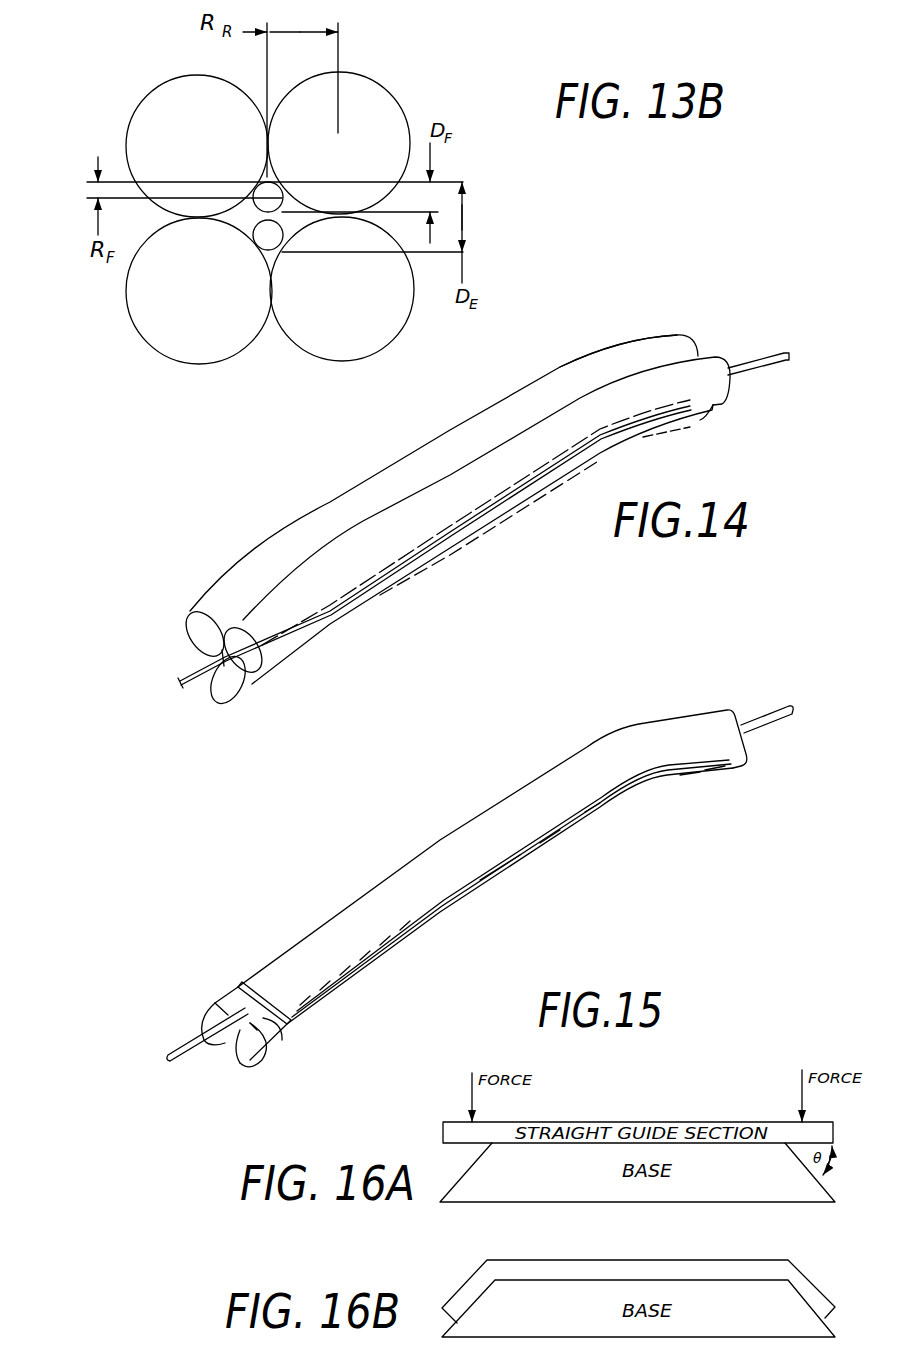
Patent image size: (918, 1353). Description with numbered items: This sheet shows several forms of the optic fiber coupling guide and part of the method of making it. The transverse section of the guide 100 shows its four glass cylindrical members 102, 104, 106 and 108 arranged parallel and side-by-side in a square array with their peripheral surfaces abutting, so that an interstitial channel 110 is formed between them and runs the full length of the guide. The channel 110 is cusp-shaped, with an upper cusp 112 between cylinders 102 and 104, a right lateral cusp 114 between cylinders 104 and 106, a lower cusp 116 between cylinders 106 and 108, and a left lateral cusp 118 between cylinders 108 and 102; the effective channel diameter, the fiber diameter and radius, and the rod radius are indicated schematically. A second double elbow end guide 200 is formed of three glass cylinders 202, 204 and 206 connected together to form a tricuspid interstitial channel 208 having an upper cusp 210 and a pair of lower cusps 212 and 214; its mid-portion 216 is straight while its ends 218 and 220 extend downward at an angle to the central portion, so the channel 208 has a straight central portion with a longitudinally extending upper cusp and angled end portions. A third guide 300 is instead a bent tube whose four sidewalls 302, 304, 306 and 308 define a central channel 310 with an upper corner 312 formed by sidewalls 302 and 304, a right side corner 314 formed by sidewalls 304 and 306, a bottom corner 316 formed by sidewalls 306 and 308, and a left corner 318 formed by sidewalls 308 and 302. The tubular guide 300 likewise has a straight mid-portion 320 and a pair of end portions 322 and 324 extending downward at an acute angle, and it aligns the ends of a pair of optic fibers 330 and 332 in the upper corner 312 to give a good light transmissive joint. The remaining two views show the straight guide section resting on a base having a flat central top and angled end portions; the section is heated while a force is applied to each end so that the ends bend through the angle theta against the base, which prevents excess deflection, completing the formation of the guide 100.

In FIG. 16B, the optic fiber guide 100 is at (650, 1277).
In FIG. 13B, the cylindrical member 102 is at (158, 97).
In FIG. 13B, the cylindrical member 104 is at (383, 93).
In FIG. 13B, the cylindrical member 106 is at (382, 312).
In FIG. 13B, the cylindrical member 108 is at (190, 343).
In FIG. 13B, the interstitial channel 110 is at (252, 222).
In FIG. 13B, the upper cusp 112 is at (268, 176).
In FIG. 13B, the right lateral cusp 114 is at (297, 220).
In FIG. 13B, the lower cusp 116 is at (273, 263).
In FIG. 13B, the left lateral cusp 118 is at (237, 217).
In FIG. 14, the guide 200 is at (437, 548).
In FIG. 14, the glass cylinder 202 is at (424, 499).
In FIG. 14, the glass cylinder 204 is at (516, 518).
In FIG. 14, the glass cylinder 206 is at (395, 583).
In FIG. 14, the tricuspid interstitial channel 208 is at (225, 658).
In FIG. 14, the upper cusp 210 is at (243, 620).
In FIG. 14, the lower cusp 212 is at (260, 658).
In FIG. 14, the lower cusp 214 is at (222, 658).
In FIG. 14, the mid-portion 216 is at (460, 477).
In FIG. 14, the end 218 is at (248, 688).
In FIG. 14, the end 220 is at (703, 420).
In FIG. 15, the guide 300 is at (452, 917).
In FIG. 15, the sidewall 302 is at (212, 995).
In FIG. 15, the sidewall 304 is at (283, 972).
In FIG. 15, the sidewall 306 is at (317, 1002).
In FIG. 15, the sidewall 308 is at (223, 1048).
In FIG. 15, the central channel 310 is at (250, 1027).
In FIG. 15, the upper corner 312 is at (222, 1007).
In FIG. 15, the right side corner 314 is at (283, 1025).
In FIG. 15, the bottom corner 316 is at (243, 1062).
In FIG. 15, the left corner 318 is at (215, 1010).
In FIG. 15, the mid-portion 320 is at (518, 870).
In FIG. 15, the end portion 322 is at (330, 987).
In FIG. 15, the end portion 324 is at (717, 773).
In FIG. 15, the optic fiber 330 is at (182, 1047).
In FIG. 15, the optic fiber 332 is at (770, 722).